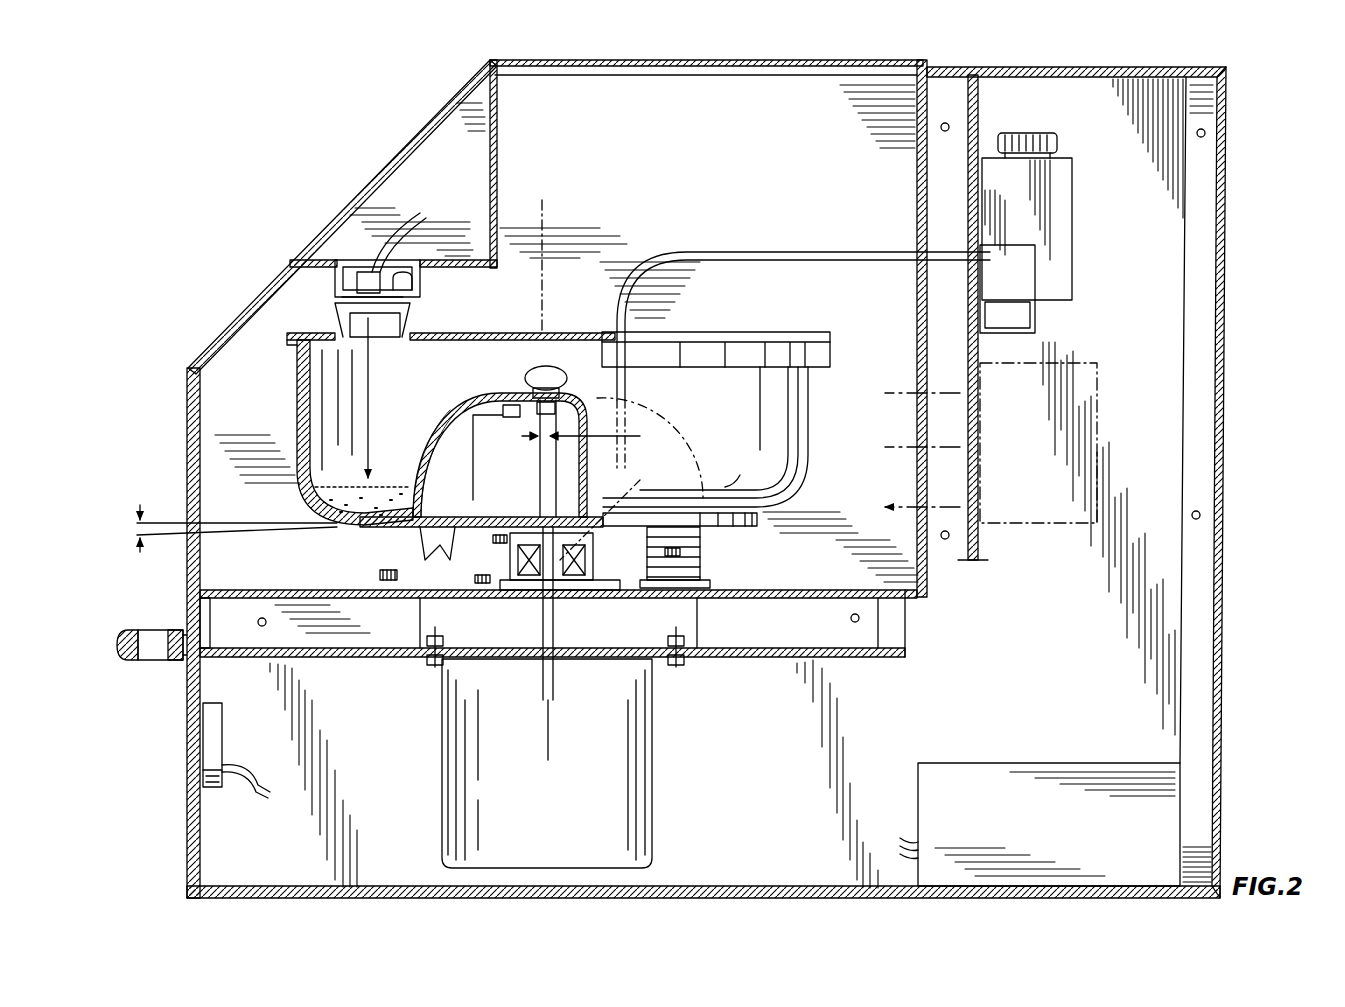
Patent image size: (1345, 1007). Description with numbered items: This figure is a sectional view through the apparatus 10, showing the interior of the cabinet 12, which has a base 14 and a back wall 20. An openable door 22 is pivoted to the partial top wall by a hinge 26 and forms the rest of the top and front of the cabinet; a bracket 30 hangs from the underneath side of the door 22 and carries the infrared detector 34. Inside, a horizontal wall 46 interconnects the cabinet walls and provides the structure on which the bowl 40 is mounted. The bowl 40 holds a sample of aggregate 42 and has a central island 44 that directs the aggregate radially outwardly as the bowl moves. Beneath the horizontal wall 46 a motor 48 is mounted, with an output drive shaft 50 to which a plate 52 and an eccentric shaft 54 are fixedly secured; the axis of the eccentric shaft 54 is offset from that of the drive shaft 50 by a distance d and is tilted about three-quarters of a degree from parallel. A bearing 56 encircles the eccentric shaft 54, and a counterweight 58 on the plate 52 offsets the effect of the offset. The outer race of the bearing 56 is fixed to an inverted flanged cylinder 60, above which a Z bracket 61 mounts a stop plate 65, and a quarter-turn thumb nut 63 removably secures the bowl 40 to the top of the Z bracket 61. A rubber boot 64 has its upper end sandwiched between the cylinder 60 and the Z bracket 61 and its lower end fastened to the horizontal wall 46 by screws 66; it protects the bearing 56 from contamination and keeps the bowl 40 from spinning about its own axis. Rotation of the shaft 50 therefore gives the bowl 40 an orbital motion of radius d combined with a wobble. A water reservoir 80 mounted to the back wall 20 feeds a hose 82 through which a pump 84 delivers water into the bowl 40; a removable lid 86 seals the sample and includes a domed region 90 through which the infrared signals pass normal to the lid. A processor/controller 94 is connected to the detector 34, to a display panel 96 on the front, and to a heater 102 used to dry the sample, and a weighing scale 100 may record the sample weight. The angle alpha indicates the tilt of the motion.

The apparatus 10 is at (1287, 116).
The cabinet 12 is at (1228, 447).
The base 14 is at (740, 890).
The back wall 20 is at (917, 167).
The door 22 is at (200, 362).
The hinge 26 is at (928, 66).
The bracket 30 is at (500, 160).
The infrared detector 34 is at (421, 284).
The bowl 40 is at (808, 405).
The sample of aggregate 42 is at (320, 475).
The island 44 is at (468, 398).
The horizontal wall 46 is at (262, 590).
The motor 48 is at (560, 821).
The output drive shaft 50 is at (540, 660).
The plate 52 is at (475, 590).
The eccentric shaft 54 is at (560, 590).
The bearing 56 is at (482, 520).
The counterweight 58 is at (420, 545).
The inverted flanged cylinder 60 is at (612, 560).
The Z bracket 61 is at (600, 430).
The thumb nut 63 is at (560, 365).
The rubber boot 64 is at (700, 545).
The plate 65 is at (422, 468).
The screws 66 is at (392, 600).
The water reservoir 80 is at (1072, 235).
The hose 82 is at (745, 250).
The pump 84 is at (1040, 278).
The lid 86 is at (750, 332).
The domed region 90 is at (338, 312).
The processor/controller 94 is at (1060, 845).
The display panel 96 is at (210, 737).
The weighing scale 100 is at (432, 438).
The heater 102 is at (1075, 365).
The tilt angle alpha is at (232, 515).
The offset distance d is at (591, 446).